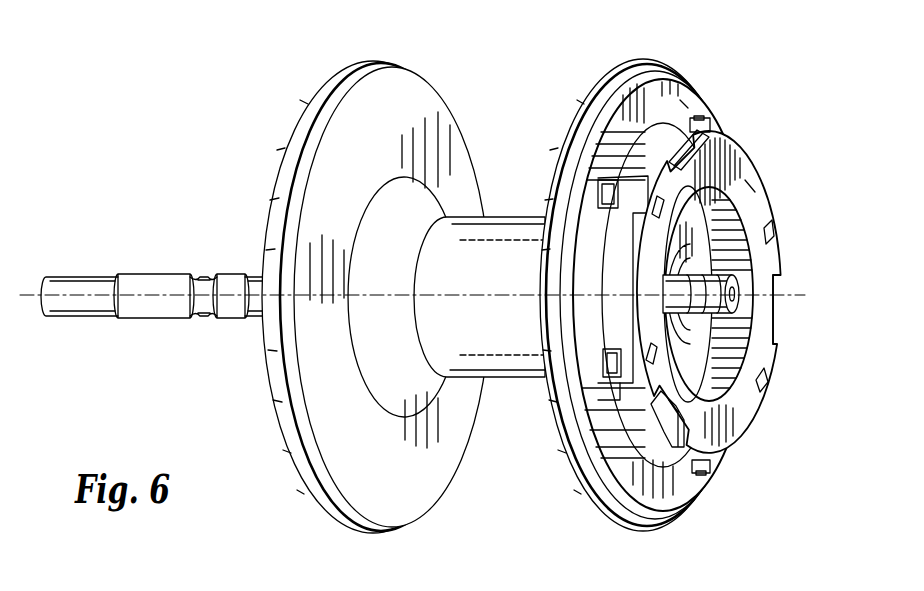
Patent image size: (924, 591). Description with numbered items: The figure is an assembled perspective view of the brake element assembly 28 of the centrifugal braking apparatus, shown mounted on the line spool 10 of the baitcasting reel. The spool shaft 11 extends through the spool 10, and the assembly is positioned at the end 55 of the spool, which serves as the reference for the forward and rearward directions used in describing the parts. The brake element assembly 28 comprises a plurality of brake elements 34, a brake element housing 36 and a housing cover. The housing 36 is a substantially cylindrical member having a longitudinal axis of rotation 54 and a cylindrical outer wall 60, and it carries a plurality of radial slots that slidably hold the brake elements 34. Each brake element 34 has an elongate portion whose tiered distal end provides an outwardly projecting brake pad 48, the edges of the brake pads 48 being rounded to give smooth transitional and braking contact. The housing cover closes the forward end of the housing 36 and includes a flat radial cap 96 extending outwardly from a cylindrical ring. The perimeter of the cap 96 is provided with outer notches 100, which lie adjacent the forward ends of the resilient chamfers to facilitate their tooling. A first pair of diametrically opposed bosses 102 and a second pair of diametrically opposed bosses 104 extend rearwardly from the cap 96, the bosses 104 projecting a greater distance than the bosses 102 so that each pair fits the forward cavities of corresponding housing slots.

The line spool 10 is at (418, 100).
The spool shaft 11 is at (210, 276).
The brake element assembly 28 is at (737, 153).
The brake element 34 is at (705, 118).
The brake element housing 36 is at (600, 286).
The brake pad 48 is at (605, 178).
The longitudinal axis of rotation 54 is at (796, 292).
The end of line spool 55 is at (682, 102).
The cylindrical outer wall 60 is at (637, 437).
The radial cap 96 is at (750, 187).
The outer notch 100 is at (686, 136).
The first pair of bosses 102 is at (625, 350).
The second pair of bosses 104 is at (625, 203).